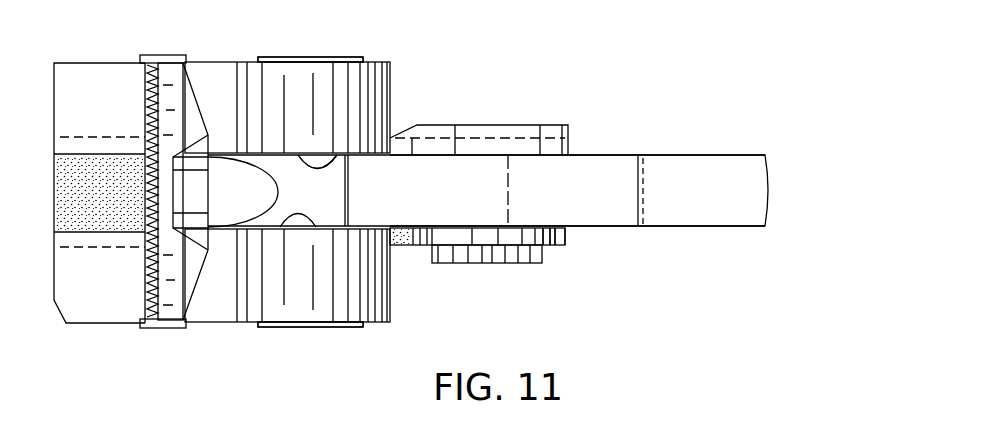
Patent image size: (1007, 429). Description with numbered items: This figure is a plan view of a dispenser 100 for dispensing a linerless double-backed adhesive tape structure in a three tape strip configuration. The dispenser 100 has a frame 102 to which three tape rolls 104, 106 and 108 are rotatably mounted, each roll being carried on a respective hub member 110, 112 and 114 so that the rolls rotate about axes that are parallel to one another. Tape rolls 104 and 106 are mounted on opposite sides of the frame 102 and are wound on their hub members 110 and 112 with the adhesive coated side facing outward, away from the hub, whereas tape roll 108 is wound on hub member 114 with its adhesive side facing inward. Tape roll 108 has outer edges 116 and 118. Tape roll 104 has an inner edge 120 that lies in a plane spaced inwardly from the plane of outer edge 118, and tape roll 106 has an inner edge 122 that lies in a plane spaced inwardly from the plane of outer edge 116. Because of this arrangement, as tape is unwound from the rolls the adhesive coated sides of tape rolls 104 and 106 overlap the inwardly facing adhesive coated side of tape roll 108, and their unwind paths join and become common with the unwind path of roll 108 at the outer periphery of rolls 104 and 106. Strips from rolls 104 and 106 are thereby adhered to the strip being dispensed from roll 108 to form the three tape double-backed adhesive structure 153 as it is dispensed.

The dispenser 100 is at (658, 62).
The frame 102 is at (677, 152).
The tape roll 104 is at (343, 303).
The tape roll 106 is at (342, 68).
The tape roll 108 is at (550, 248).
The hub member 110 is at (298, 328).
The hub member 112 is at (301, 58).
The hub member 114 is at (480, 265).
The outer edge 116 is at (515, 135).
The outer edge 118 is at (553, 247).
The inner edge 120 is at (307, 213).
The inner edge 122 is at (343, 150).
The three tape double-backed adhesive structure 153 is at (53, 292).